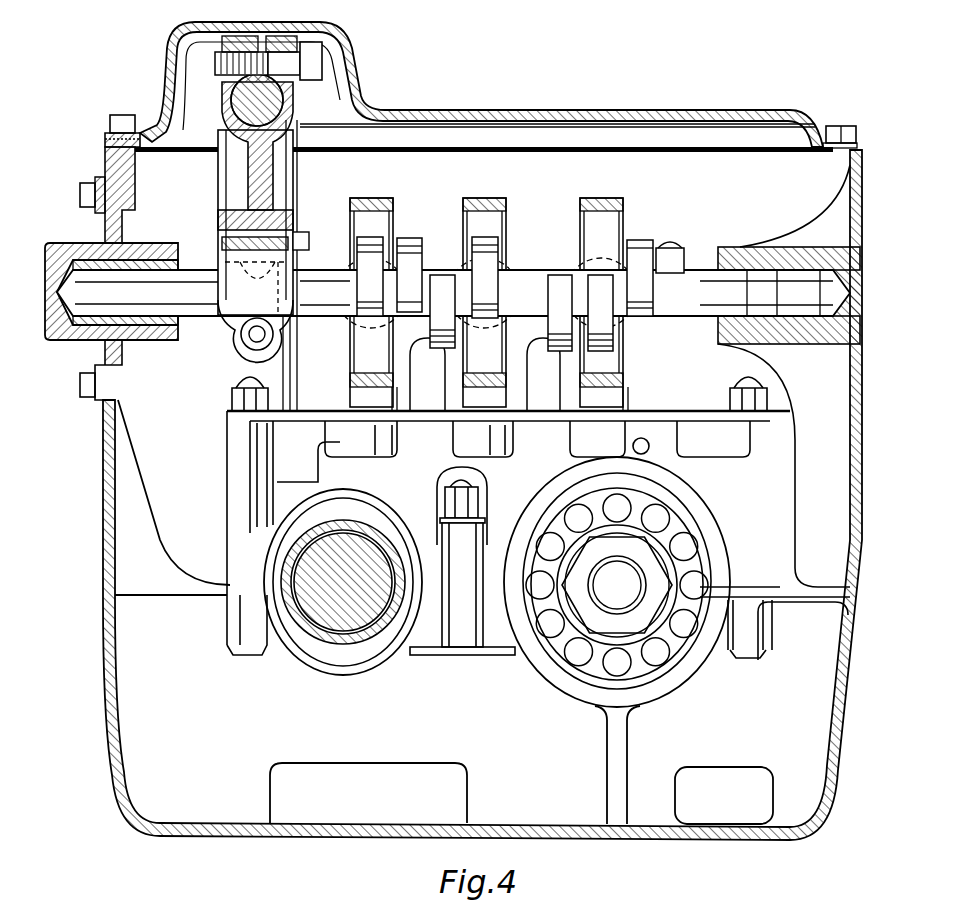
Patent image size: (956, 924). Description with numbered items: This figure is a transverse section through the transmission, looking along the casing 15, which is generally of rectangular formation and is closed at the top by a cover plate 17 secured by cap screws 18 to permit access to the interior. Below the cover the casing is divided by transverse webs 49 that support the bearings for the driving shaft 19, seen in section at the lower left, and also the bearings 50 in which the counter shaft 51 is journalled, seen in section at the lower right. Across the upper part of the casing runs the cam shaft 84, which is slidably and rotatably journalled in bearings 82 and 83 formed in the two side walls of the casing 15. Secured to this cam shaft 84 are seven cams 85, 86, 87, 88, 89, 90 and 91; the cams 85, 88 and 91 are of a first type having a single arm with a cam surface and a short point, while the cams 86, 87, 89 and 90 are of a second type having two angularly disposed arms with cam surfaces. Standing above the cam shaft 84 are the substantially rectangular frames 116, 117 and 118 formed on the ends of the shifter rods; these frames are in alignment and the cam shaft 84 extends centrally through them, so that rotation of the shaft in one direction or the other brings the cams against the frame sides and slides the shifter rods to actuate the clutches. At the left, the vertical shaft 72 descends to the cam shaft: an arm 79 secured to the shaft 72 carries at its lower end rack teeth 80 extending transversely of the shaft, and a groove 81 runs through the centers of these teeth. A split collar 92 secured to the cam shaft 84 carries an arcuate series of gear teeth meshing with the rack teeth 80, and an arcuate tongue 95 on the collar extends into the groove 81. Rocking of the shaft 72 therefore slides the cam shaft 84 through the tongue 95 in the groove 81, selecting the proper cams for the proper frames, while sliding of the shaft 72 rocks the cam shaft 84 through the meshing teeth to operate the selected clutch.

The casing 15 is at (104, 512).
The cover plate 17 is at (636, 110).
The cap screws 18 is at (844, 125).
The driving shaft 19 is at (333, 607).
The transverse webs 49 is at (470, 765).
The bearings 50 is at (657, 665).
The counter shaft 51 is at (625, 574).
The shaft 72 is at (252, 94).
The arm 79 is at (273, 172).
The rack teeth 80 is at (293, 236).
The groove 81 is at (242, 208).
The bearing 82 is at (747, 250).
The bearing 83 is at (150, 247).
The cam shaft 84 is at (698, 282).
The cam 85 is at (370, 240).
The cam 86 is at (410, 243).
The cam 87 is at (440, 280).
The cam 88 is at (493, 250).
The cam 89 is at (557, 283).
The cam 90 is at (600, 290).
The cam 91 is at (638, 250).
The split collar 92 is at (233, 320).
The arcuate tongue 95 is at (232, 237).
The frame 116 is at (388, 202).
The frame 117 is at (504, 202).
The frame 118 is at (615, 202).